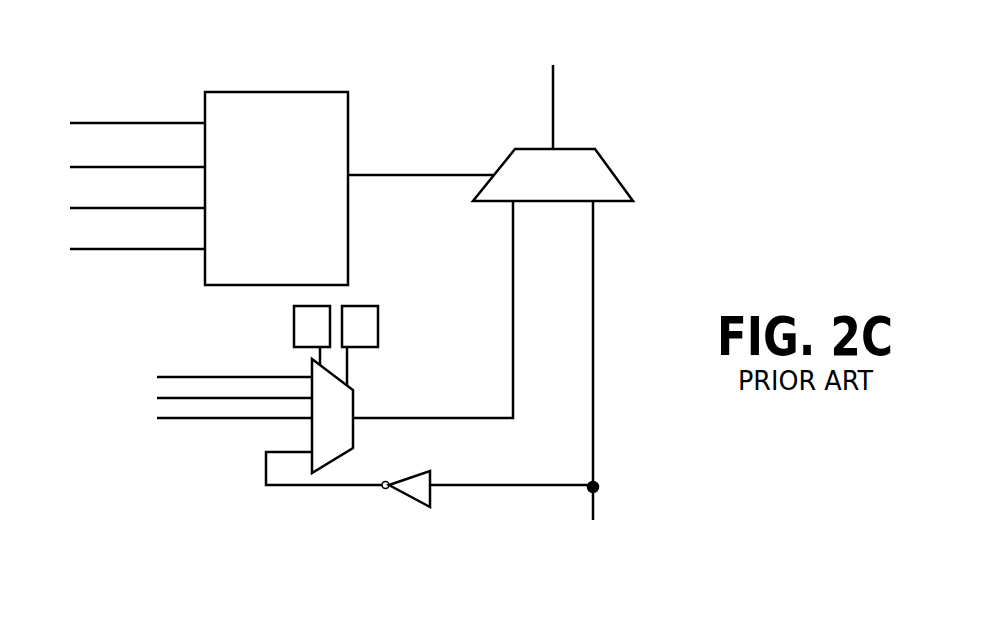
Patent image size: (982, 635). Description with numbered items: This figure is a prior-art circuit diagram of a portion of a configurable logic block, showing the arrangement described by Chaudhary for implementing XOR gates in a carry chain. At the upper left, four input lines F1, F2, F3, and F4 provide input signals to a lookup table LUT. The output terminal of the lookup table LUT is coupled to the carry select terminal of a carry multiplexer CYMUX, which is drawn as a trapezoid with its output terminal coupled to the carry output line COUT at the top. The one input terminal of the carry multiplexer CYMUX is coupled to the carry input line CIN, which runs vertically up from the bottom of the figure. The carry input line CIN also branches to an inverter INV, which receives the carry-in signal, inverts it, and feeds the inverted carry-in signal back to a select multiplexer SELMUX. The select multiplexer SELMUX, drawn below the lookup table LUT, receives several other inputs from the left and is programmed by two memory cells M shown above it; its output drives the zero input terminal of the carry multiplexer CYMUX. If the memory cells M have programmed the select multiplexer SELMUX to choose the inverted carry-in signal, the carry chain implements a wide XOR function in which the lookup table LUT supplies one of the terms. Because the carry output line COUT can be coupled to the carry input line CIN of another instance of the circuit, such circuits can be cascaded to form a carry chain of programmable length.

The lookup table LUT is at (276, 188).
The input line F1 is at (119, 249).
The input line F2 is at (119, 208).
The input line F3 is at (119, 167).
The input line F4 is at (119, 123).
The carry multiplexer CYMUX is at (678, 157).
The carry output line COUT is at (553, 92).
The carry input line CIN is at (589, 377).
The select multiplexer SELMUX is at (357, 408).
The memory cells M is at (336, 346).
The inverter INV is at (430, 483).